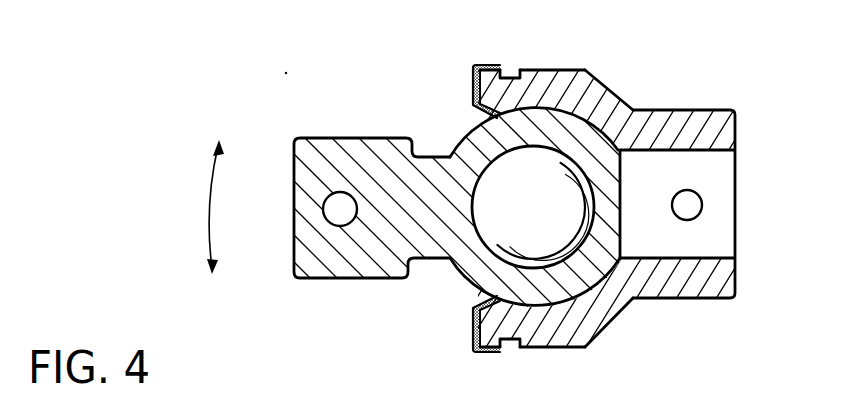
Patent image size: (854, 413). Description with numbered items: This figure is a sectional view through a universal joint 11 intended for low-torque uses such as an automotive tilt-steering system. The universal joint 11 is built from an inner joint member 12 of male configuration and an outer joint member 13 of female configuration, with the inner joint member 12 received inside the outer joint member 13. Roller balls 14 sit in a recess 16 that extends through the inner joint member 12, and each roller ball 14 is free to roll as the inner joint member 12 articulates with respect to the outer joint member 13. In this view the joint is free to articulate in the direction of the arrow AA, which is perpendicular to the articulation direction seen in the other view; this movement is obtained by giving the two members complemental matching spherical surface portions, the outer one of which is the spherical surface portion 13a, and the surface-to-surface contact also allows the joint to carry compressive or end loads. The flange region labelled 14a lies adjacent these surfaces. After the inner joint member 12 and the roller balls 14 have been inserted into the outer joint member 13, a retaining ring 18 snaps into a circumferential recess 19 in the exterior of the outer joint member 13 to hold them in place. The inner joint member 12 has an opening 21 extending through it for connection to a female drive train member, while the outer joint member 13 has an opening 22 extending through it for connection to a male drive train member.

The universal joint 11 is at (456, 345).
The inner joint member 12 is at (437, 157).
The outer joint member 13 is at (634, 132).
The spherical surface portion 13a is at (631, 98).
The roller ball 14 is at (578, 115).
The flange face of hub boss 14a is at (552, 125).
The recess 16 is at (590, 108).
The retaining ring 18 is at (473, 66).
The circumferential recess 19 is at (511, 75).
The opening 21 is at (323, 207).
The opening 22 is at (704, 205).
The arrow AA is at (210, 212).